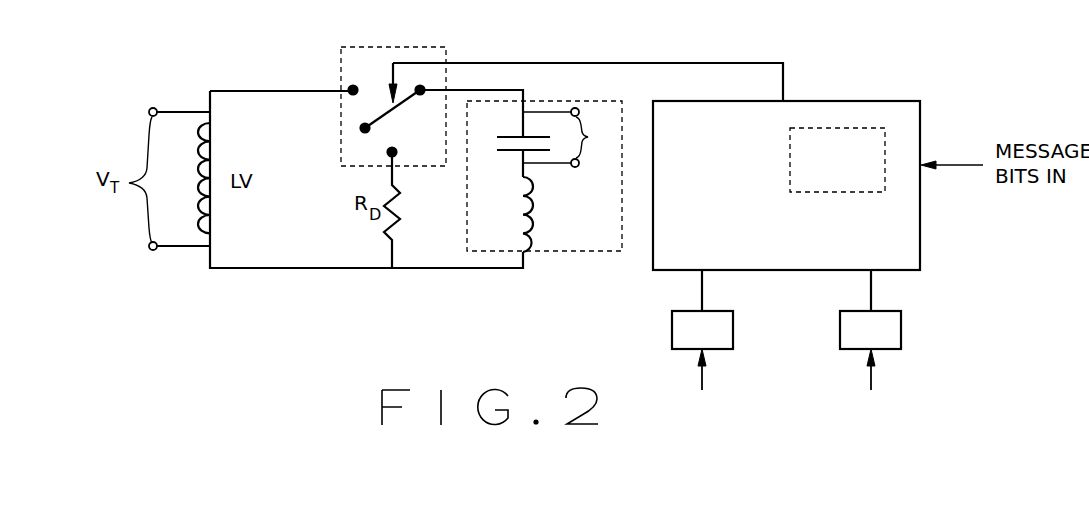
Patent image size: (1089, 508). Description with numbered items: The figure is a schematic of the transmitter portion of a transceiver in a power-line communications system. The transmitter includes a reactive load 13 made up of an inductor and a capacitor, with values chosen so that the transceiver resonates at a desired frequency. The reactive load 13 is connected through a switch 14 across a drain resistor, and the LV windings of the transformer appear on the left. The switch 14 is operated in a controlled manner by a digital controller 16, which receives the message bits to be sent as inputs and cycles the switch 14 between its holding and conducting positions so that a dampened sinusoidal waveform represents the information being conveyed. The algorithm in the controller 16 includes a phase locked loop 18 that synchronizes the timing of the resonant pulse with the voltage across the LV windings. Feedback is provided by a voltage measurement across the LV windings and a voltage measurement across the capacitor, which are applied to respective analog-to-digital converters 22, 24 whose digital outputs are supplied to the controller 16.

The reactive load 13 is at (604, 253).
The switch 14 is at (362, 47).
The digital controller 16 is at (868, 101).
The phase locked loop 18 is at (824, 170).
The analog-to-digital converter 22 is at (672, 337).
The analog-to-digital converter 24 is at (840, 337).